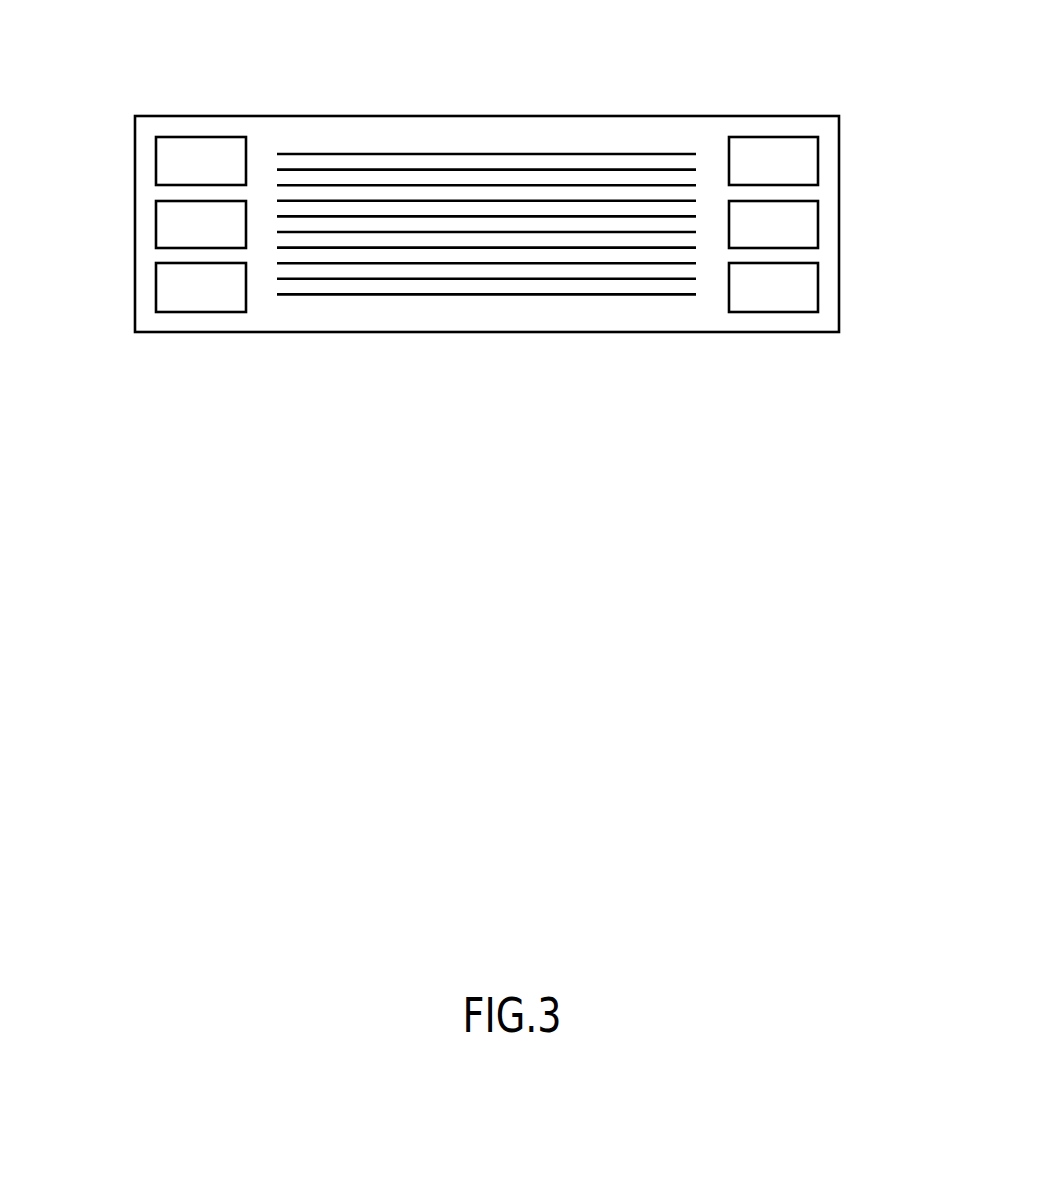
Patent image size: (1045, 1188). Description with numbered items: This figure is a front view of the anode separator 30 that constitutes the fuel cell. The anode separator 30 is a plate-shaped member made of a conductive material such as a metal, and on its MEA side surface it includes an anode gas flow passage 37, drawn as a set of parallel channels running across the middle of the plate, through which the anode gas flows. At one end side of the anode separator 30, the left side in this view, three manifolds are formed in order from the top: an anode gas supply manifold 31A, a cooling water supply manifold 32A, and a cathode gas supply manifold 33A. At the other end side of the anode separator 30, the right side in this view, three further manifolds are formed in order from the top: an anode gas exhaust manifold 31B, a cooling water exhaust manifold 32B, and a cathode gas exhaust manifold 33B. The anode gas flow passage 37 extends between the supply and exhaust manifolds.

The anode separator 30 is at (122, 102).
The anode gas supply manifold 31A is at (157, 155).
The cooling water supply manifold 32A is at (157, 219).
The cathode gas supply manifold 33A is at (157, 282).
The anode gas exhaust manifold 31B is at (815, 170).
The cooling water exhaust manifold 32B is at (815, 234).
The cathode gas exhaust manifold 33B is at (815, 297).
The anode gas flow passage 37 is at (472, 296).